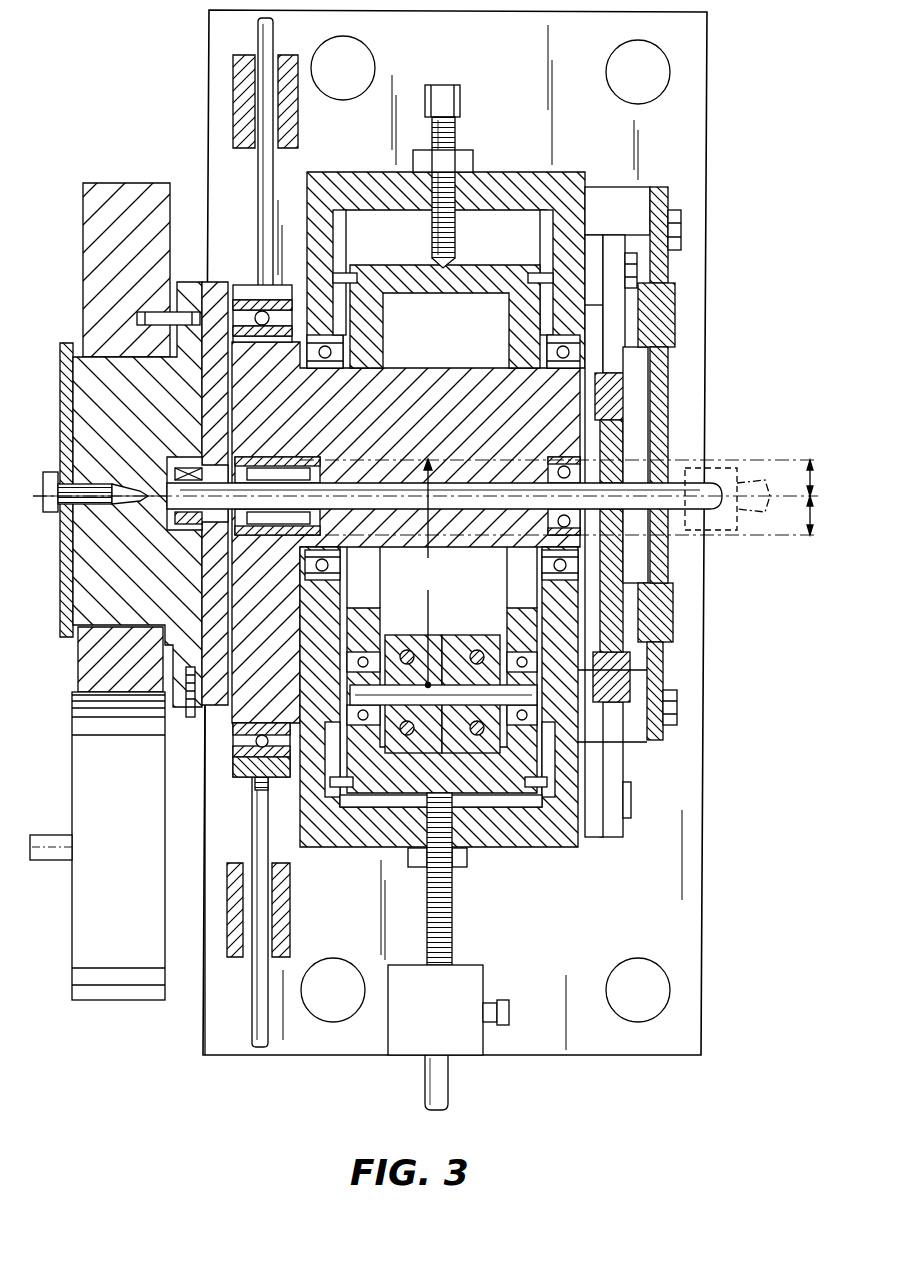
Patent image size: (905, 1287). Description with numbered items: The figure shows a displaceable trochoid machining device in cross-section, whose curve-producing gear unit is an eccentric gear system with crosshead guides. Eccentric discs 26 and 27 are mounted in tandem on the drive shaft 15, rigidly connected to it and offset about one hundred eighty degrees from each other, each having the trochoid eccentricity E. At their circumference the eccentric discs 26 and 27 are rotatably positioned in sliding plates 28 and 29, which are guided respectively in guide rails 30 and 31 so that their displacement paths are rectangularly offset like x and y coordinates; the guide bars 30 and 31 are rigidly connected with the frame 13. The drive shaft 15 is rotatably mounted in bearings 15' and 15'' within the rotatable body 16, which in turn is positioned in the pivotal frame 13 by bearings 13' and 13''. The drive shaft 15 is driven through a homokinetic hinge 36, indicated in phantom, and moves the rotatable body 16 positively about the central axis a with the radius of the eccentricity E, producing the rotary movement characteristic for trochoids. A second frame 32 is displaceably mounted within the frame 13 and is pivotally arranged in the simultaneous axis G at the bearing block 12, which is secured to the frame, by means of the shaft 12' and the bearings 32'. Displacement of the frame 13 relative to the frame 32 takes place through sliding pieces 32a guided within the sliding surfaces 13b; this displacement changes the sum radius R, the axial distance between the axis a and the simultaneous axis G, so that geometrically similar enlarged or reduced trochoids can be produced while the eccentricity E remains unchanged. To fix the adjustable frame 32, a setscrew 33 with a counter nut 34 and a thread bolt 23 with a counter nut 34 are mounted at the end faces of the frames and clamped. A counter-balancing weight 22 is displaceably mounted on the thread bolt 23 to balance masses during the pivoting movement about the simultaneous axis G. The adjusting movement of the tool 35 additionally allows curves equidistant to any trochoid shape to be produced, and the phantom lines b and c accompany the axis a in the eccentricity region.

The bearing block 12 is at (423, 669).
The shaft 12' is at (477, 669).
The frame 13 is at (439, 721).
The bearing 13' is at (409, 270).
The bearing 13'' is at (465, 316).
The sliding surfaces 13b is at (578, 750).
The drive shaft 15 is at (425, 525).
The bearing 15' is at (303, 474).
The bearing 15'' is at (553, 475).
The rotatable body 16 is at (618, 381).
The counter-balancing weight 22 is at (485, 977).
The thread bolt 23 is at (450, 928).
The eccentric disc 26 is at (670, 446).
The eccentric disc 27 is at (648, 428).
The sliding plate 28 is at (677, 305).
The sliding plate 29 is at (632, 395).
The guide rail 30 is at (662, 208).
The guide rail 31 is at (606, 250).
The second frame 32 is at (443, 251).
The bearings 32' is at (408, 782).
The sliding pieces 32a is at (540, 830).
The setscrew 33 is at (439, 86).
The counter nut 34 is at (463, 158).
The tool 35 is at (120, 1000).
The homokinetic hinge 36 is at (728, 531).
The sum radius R is at (425, 573).
The simultaneous axis G is at (412, 688).
The central axis a is at (766, 462).
The line b is at (752, 515).
The line c is at (800, 536).
The trochoid eccentricity E is at (798, 497).